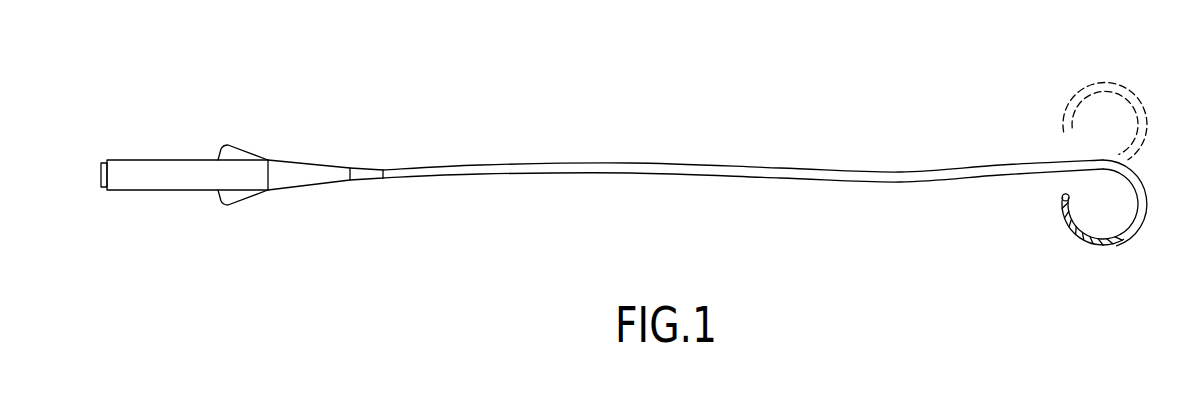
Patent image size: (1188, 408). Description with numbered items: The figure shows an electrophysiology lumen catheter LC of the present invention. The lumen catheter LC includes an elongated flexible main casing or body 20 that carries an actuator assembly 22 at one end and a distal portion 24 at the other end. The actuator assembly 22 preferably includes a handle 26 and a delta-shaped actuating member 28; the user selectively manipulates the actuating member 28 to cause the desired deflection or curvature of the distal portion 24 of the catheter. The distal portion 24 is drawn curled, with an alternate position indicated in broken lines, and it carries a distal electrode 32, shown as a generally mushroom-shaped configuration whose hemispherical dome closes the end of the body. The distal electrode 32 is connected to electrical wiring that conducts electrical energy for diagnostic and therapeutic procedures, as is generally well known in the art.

The main casing or body 20 is at (692, 165).
The actuator assembly 22 is at (288, 150).
The distal portion 24 is at (1068, 93).
The handle 26 is at (160, 167).
The delta-shaped actuating member 28 is at (243, 144).
The distal electrode 32 is at (1062, 198).
The lumen catheter LC is at (828, 123).